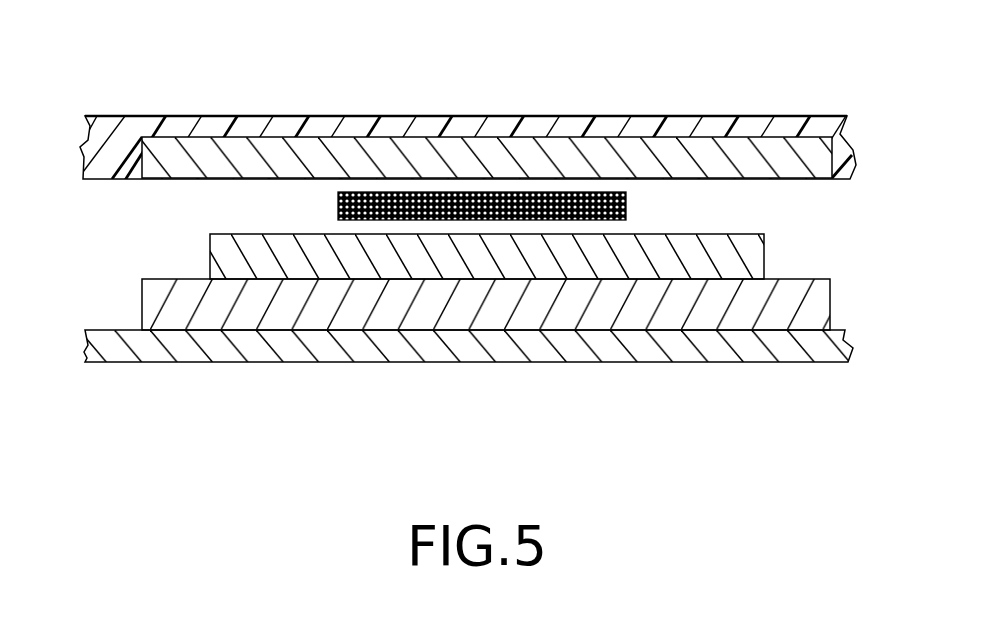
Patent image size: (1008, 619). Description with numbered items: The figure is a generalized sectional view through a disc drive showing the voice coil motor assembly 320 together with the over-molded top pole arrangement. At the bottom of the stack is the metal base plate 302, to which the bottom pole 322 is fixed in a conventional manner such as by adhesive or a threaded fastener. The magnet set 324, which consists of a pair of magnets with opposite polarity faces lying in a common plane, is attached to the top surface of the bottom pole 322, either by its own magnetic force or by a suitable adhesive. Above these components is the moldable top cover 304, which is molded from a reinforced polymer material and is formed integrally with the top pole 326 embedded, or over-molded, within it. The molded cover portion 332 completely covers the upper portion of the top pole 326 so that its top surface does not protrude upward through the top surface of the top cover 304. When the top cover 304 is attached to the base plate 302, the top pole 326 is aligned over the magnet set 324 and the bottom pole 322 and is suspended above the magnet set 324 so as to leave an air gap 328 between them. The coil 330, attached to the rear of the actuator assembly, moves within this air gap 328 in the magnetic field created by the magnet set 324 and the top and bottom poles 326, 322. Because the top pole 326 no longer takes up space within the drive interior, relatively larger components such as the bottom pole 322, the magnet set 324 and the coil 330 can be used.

The base plate 302 is at (185, 413).
The top cover 304 is at (468, 93).
The voice coil motor assembly 320 is at (463, 371).
The bottom pole 322 is at (150, 300).
The magnet set 324 is at (222, 250).
The top pole 326 is at (702, 150).
The air gap 328 is at (757, 210).
The coil 330 is at (626, 203).
The cover portion 332 is at (475, 125).